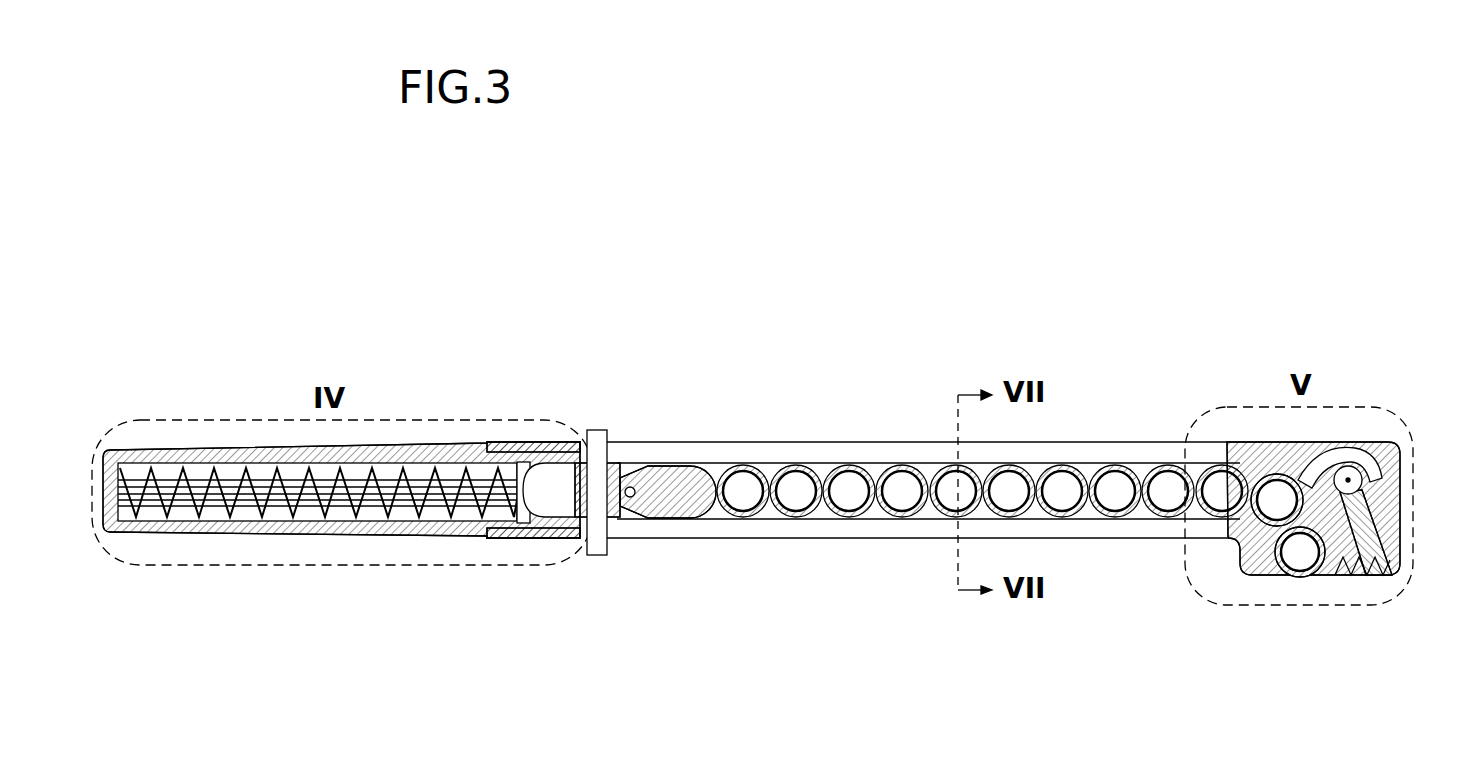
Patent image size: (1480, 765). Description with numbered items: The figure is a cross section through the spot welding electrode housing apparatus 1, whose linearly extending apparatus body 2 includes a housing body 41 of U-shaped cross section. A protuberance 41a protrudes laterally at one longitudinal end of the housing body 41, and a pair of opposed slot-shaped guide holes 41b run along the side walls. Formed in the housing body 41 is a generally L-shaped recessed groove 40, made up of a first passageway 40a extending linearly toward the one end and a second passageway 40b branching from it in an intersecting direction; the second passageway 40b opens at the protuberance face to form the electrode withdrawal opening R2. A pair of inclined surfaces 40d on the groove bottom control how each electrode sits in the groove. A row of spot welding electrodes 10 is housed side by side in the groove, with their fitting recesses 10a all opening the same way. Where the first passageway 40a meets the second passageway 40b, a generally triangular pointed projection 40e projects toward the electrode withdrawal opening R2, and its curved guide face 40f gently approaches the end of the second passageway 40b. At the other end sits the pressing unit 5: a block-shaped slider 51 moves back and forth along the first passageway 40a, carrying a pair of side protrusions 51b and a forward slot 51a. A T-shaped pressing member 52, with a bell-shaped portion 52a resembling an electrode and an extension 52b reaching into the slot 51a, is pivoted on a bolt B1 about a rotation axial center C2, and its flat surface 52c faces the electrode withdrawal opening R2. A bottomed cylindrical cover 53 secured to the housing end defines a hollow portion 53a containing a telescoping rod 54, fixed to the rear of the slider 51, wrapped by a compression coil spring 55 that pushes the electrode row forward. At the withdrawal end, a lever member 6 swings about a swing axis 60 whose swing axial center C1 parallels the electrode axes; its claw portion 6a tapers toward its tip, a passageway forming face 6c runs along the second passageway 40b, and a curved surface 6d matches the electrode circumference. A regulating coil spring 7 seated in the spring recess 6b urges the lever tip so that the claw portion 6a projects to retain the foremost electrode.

The spot welding electrode housing apparatus 1 is at (1203, 287).
The apparatus body 2 is at (1093, 405).
The pressing unit 5 is at (445, 433).
The lever member 6 is at (1370, 586).
The claw portion 6a is at (1308, 578).
The spring recess 6b is at (1378, 545).
The passageway forming face 6c is at (1333, 578).
The curved surface 6d is at (1358, 582).
The regulating coil spring 7 is at (1384, 582).
The spot welding electrode 10 is at (850, 517).
The fitting recess 10a is at (848, 468).
The recessed groove 40 is at (1070, 469).
The first passageway 40a is at (988, 468).
The second passageway 40b is at (1305, 478).
The inclined surface 40d is at (767, 470).
The pointed projection 40e is at (1337, 462).
The curved guide face 40f is at (1250, 463).
The housing body 41 is at (843, 441).
The protuberance 41a is at (1250, 540).
The guide hole 41b is at (905, 458).
The slider 51 is at (572, 478).
The slot 51a is at (612, 540).
The protrusion 51b is at (598, 432).
The pressing member 52 is at (760, 312).
The bell-shaped portion 52a is at (700, 470).
The extension 52b is at (652, 470).
The flat surface 52c is at (705, 520).
The cylindrical cover 53 is at (263, 452).
The hollow portion 53a is at (360, 522).
The telescoping rod 54 is at (238, 508).
The compression coil spring 55 is at (455, 520).
The swing axis 60 is at (1370, 482).
The bolt B1 is at (622, 460).
The swing axial center C1 is at (1362, 478).
The rotation axial center C2 is at (636, 498).
The electrode withdrawal opening R2 is at (1308, 520).